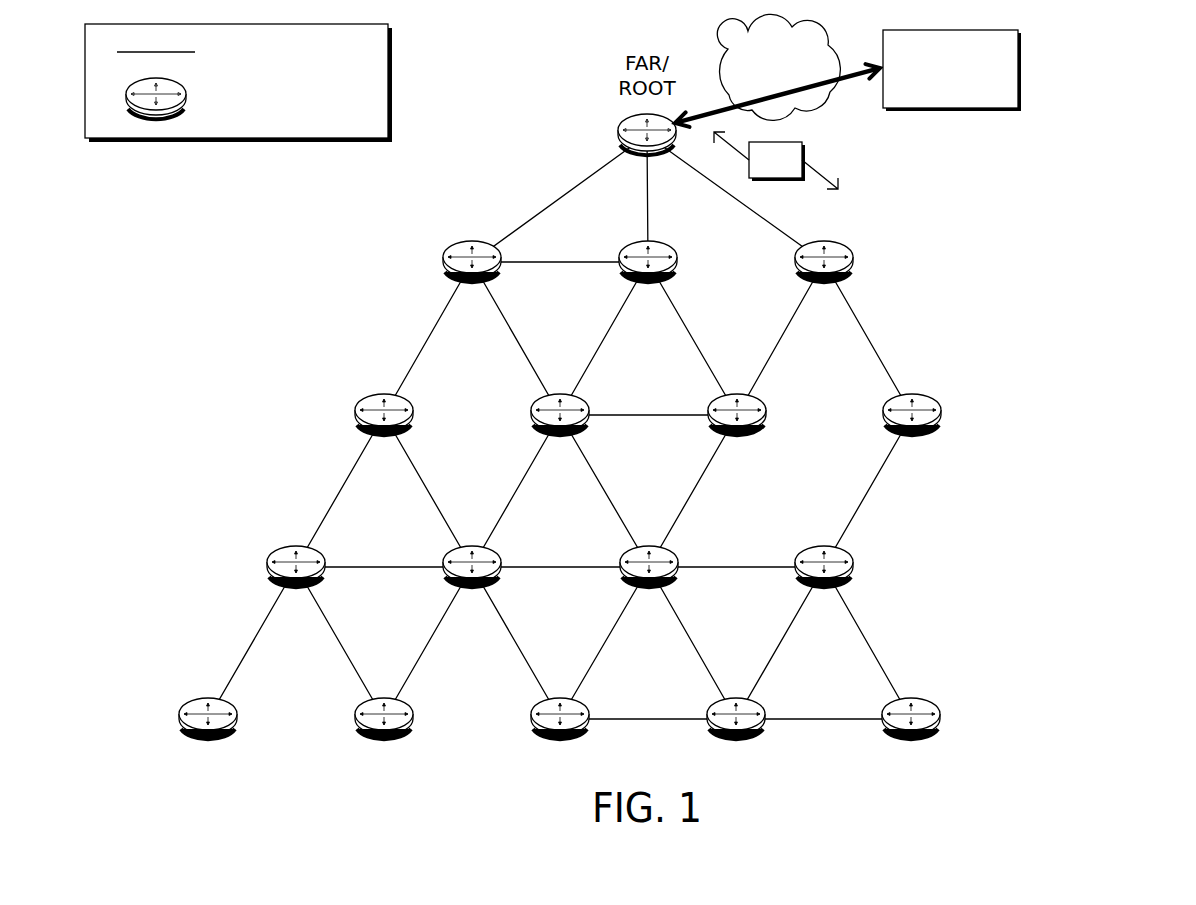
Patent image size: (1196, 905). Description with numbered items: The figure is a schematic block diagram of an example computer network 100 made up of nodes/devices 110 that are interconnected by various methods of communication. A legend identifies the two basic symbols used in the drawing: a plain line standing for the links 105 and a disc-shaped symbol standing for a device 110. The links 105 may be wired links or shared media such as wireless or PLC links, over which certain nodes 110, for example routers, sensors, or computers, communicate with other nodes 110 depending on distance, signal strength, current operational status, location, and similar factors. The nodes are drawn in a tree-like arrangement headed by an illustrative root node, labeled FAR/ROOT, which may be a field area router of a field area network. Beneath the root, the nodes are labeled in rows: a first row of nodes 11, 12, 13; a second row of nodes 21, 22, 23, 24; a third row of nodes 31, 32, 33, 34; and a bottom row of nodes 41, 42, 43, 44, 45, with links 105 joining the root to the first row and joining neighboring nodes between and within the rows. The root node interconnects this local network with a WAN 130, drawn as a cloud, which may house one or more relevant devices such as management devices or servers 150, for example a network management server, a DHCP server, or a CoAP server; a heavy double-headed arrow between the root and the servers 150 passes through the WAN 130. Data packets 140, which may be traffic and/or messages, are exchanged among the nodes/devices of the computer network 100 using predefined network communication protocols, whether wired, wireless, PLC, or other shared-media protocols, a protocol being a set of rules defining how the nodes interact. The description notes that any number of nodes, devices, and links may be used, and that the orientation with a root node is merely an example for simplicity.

The computer network 100 is at (1124, 79).
The links 105 is at (514, 380).
The nodes/devices 110 is at (236, 98).
The WAN 130 is at (760, 85).
The data packets 140 is at (791, 172).
The servers 150 is at (934, 92).
The node 11 is at (472, 278).
The node 12 is at (648, 278).
The node 13 is at (824, 278).
The node 21 is at (384, 431).
The node 22 is at (560, 431).
The node 23 is at (737, 431).
The node 24 is at (912, 431).
The node 31 is at (296, 583).
The node 32 is at (472, 583).
The node 33 is at (649, 583).
The node 34 is at (824, 583).
The node 41 is at (208, 735).
The node 42 is at (384, 735).
The node 43 is at (560, 735).
The node 44 is at (736, 735).
The node 45 is at (911, 735).